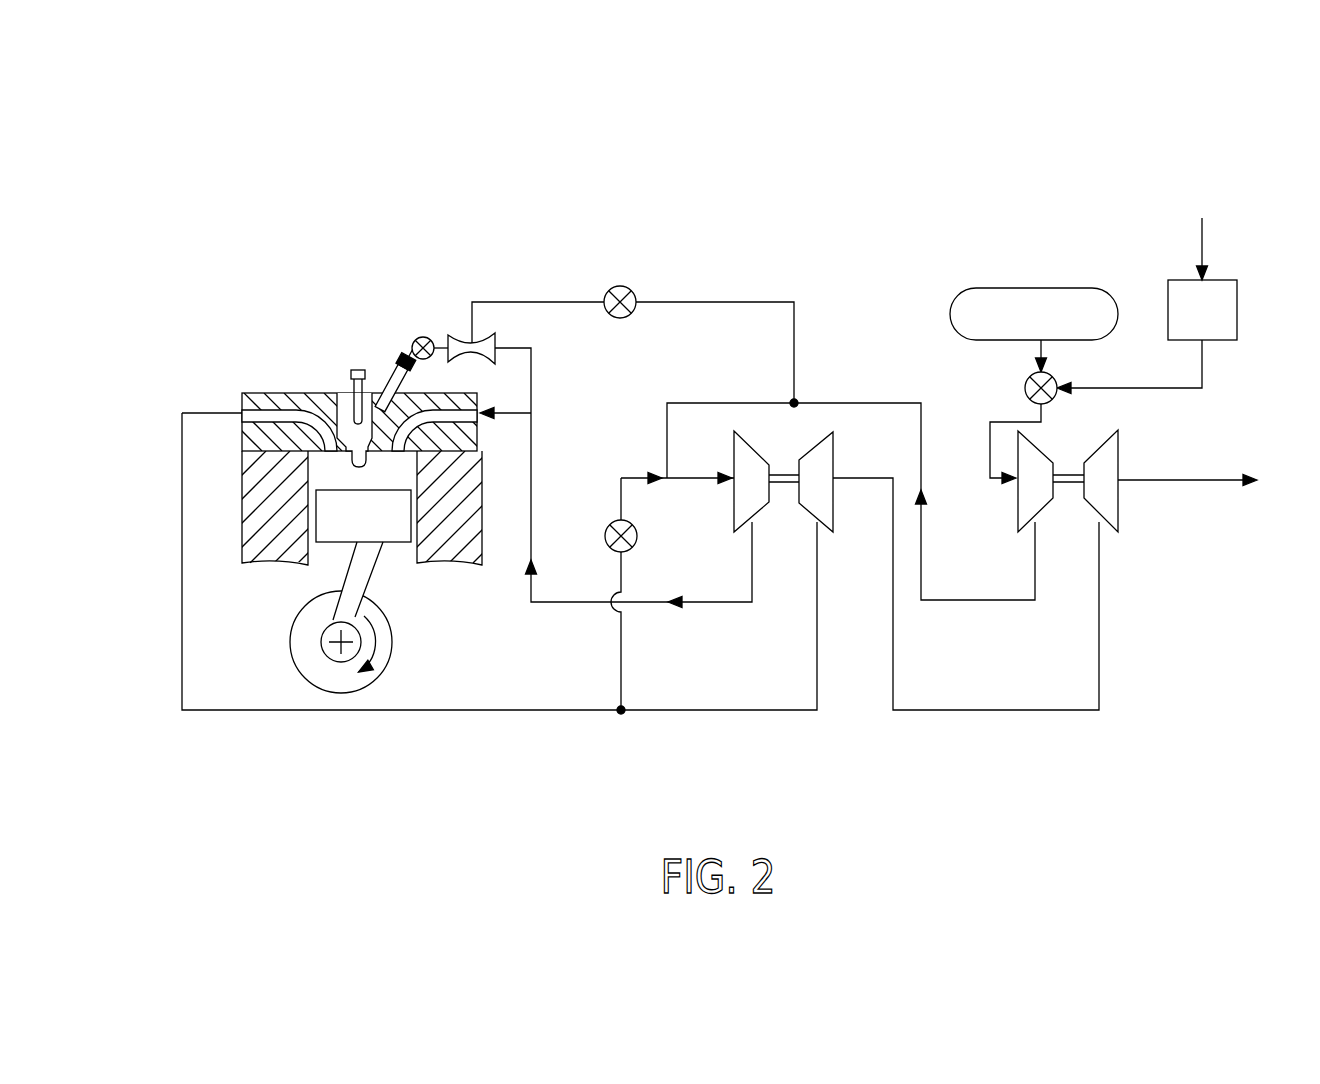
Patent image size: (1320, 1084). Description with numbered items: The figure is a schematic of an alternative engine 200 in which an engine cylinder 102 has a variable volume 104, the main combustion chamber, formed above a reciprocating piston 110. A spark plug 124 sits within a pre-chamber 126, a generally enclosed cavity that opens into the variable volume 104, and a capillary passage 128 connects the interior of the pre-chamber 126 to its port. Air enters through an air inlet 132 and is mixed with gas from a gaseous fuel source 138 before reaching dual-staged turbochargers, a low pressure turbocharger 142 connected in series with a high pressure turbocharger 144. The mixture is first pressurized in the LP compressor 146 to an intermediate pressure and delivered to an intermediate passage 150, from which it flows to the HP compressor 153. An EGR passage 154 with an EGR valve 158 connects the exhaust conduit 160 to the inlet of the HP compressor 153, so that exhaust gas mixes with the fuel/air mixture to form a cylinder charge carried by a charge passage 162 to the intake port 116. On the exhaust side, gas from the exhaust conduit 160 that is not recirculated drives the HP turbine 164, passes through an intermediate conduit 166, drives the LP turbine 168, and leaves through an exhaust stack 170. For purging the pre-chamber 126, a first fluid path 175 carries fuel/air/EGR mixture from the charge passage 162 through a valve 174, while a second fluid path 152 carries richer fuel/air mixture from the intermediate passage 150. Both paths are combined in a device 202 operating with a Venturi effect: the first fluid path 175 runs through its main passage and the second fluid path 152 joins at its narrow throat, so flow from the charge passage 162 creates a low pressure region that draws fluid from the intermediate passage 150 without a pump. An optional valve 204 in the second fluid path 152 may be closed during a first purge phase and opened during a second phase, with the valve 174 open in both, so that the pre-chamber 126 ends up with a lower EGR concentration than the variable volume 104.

The engine cylinder 102 is at (231, 338).
The variable volume 104 is at (328, 467).
The piston 110 is at (344, 529).
The intake port 116 is at (482, 420).
The spark plug 124 is at (352, 388).
The pre-chamber 126 is at (353, 375).
The capillary passage 128 is at (393, 371).
The air inlet 132 is at (1182, 326).
The gaseous fuel source 138 is at (1014, 330).
The low pressure turbocharger 142 is at (1208, 417).
The high pressure turbocharger 144 is at (853, 359).
The LP compressor 146 is at (1037, 450).
The intermediate passage 150 is at (923, 412).
The second fluid path 152 is at (712, 298).
The HP compressor 153 is at (753, 450).
The EGR passage 154 is at (622, 655).
The EGR valve 158 is at (637, 535).
The exhaust conduit 160 is at (403, 712).
The charge passage 162 is at (533, 492).
The HP turbine 164 is at (835, 455).
The intermediate conduit 166 is at (1016, 712).
The LP turbine 168 is at (1119, 455).
The exhaust stack 170 is at (1205, 483).
The valve 174 is at (418, 337).
The first fluid path 175 is at (532, 385).
The engine 200 is at (978, 189).
The device operating with a Venturi effect 202 is at (450, 335).
The optional valve 204 is at (630, 288).